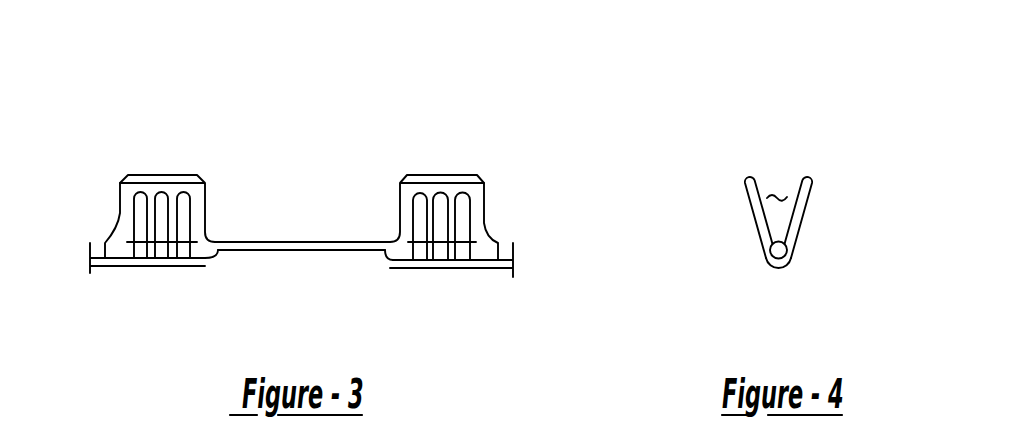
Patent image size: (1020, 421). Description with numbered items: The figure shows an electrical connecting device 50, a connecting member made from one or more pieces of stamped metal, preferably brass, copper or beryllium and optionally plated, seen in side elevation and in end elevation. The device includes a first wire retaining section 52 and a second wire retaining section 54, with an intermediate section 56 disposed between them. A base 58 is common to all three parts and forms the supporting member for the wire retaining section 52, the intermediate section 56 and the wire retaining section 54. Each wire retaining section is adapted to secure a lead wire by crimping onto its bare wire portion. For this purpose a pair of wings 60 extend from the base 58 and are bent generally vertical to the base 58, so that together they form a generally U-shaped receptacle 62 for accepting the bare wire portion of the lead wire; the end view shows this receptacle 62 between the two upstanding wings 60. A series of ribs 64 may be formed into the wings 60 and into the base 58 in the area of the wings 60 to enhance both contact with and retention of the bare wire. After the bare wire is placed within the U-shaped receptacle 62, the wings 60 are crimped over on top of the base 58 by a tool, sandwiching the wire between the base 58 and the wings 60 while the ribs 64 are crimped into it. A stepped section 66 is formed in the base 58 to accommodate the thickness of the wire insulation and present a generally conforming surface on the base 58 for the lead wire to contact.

In FIG. 3, the electrical connecting device 50 is at (290, 121).
In FIG. 4, the electrical connecting device 50 is at (741, 164).
In FIG. 3, the wire retaining section 52 is at (150, 175).
In FIG. 3, the wire retaining section 54 is at (438, 175).
In FIG. 3, the intermediate section 56 is at (300, 242).
In FIG. 4, the intermediate section 56 is at (766, 262).
In FIG. 3, the base 58 is at (193, 267).
In FIG. 4, the base 58 is at (789, 264).
In FIG. 3, the wings 60 is at (121, 213).
In FIG. 4, the wings 60 is at (759, 223).
In FIG. 4, the U-shaped receptacle 62 is at (781, 185).
In FIG. 3, the ribs 64 is at (188, 193).
In FIG. 3, the stepped section 66 is at (216, 255).